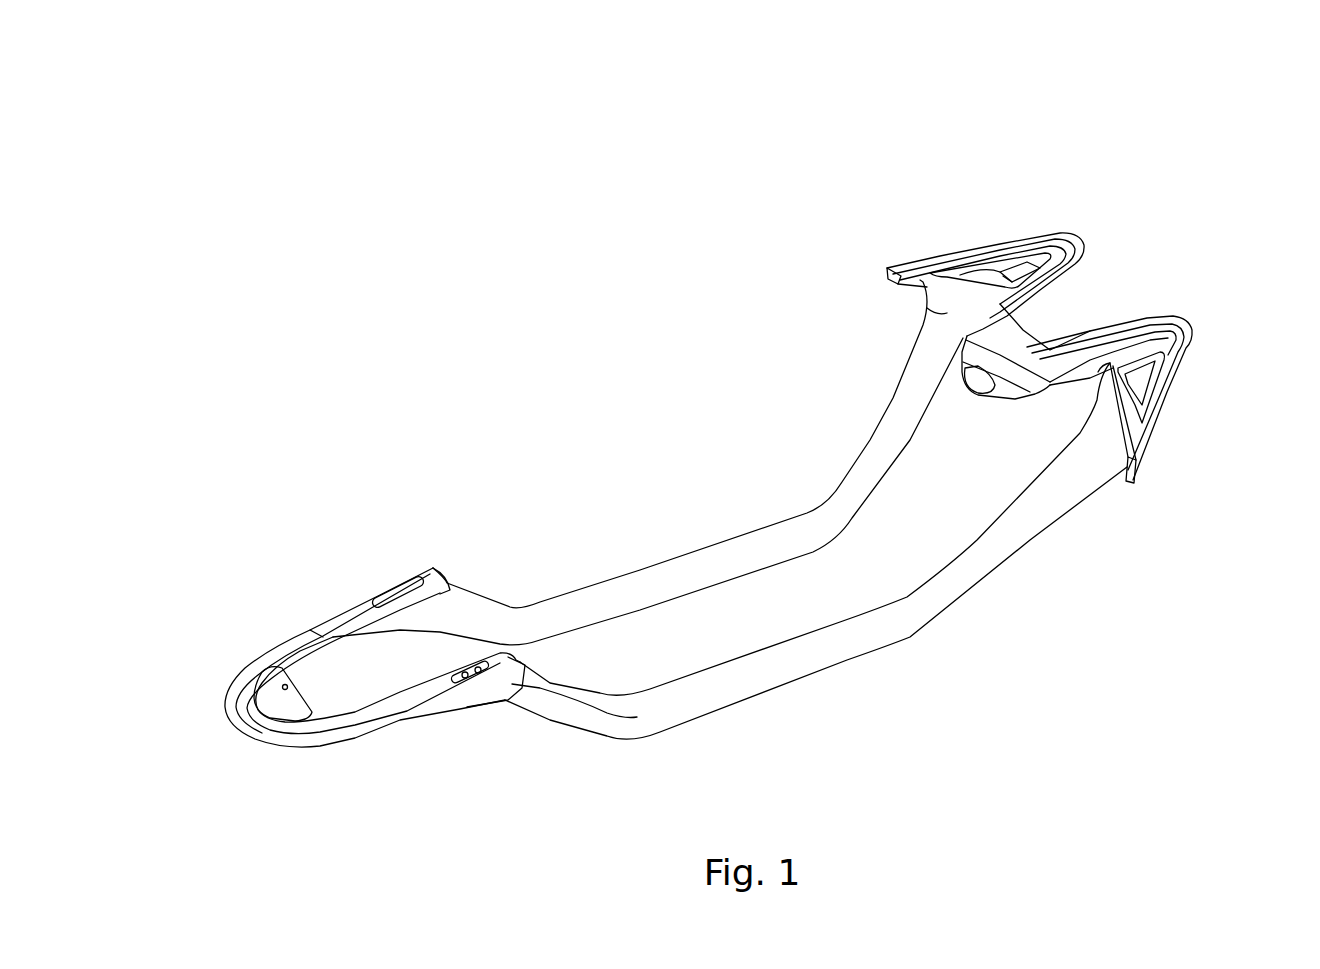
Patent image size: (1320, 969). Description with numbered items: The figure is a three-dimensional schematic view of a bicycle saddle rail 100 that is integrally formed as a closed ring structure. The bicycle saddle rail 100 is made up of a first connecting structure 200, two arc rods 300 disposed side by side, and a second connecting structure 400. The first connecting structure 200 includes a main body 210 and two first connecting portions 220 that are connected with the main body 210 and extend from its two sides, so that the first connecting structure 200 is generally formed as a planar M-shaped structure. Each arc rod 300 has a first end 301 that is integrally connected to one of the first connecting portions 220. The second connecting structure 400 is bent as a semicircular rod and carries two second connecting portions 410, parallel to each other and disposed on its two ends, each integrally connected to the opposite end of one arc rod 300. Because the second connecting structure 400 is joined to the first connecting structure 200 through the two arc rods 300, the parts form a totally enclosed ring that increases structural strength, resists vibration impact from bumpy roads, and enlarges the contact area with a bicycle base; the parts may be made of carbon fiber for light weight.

The bicycle saddle rail 100 is at (270, 51).
The first connecting structure 200 is at (1288, 180).
The main body 210 is at (1007, 372).
The first connecting portion 220 is at (1007, 233).
The arc rod 300 is at (686, 568).
The first end 301 is at (947, 315).
The second connecting structure 400 is at (263, 697).
The second connecting portion 410 is at (350, 626).